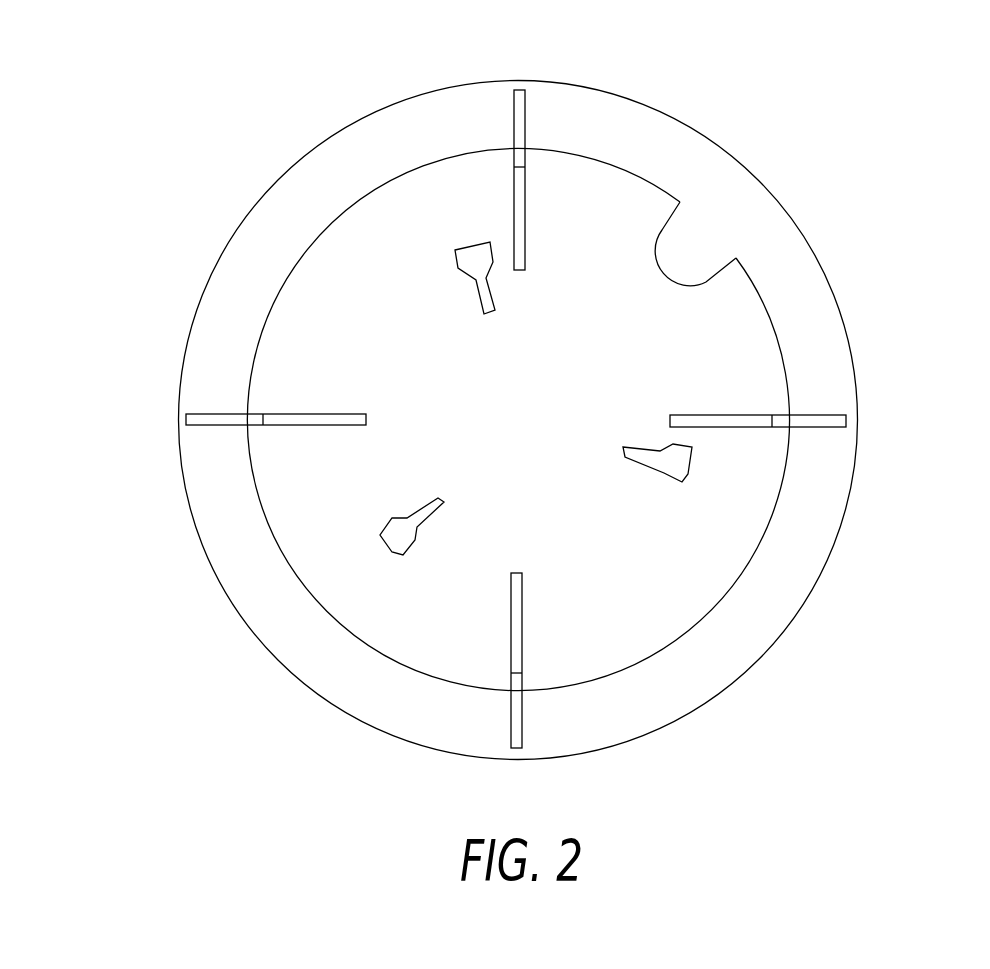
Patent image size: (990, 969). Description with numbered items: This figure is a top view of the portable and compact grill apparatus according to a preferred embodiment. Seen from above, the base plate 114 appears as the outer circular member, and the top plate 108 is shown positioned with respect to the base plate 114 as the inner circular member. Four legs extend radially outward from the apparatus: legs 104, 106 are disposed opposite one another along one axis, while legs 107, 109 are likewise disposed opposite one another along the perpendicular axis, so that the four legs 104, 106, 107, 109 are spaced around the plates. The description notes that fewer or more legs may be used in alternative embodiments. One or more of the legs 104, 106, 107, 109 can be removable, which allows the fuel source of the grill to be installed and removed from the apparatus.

The leg 104 is at (207, 413).
The leg 106 is at (832, 435).
The leg 107 is at (533, 127).
The top plate 108 is at (652, 177).
The leg 109 is at (512, 750).
The base plate 114 is at (772, 663).